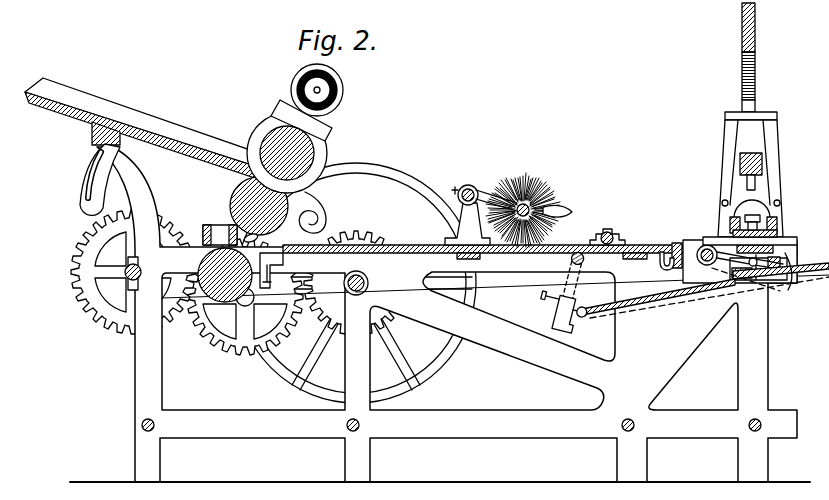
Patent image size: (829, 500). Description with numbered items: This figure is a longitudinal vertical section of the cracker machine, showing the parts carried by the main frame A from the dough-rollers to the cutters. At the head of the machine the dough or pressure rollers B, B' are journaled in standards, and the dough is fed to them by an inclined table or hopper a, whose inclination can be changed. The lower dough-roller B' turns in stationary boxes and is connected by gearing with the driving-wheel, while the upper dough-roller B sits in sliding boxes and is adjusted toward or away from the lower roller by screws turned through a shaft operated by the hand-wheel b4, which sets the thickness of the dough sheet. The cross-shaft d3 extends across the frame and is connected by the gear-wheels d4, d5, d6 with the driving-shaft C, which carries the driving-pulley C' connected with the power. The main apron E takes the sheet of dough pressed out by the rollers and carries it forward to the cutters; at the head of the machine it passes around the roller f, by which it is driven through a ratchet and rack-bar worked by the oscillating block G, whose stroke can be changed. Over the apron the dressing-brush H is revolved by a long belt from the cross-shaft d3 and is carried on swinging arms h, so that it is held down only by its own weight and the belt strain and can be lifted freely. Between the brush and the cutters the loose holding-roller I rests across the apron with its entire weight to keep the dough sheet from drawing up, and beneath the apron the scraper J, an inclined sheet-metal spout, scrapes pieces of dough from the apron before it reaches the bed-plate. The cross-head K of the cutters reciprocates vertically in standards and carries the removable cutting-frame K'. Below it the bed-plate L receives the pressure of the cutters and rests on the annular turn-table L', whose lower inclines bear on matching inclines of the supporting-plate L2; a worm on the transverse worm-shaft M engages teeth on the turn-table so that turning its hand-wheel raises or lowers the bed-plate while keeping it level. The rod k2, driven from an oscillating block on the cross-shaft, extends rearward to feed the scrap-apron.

The main frame A is at (440, 314).
The inclined table or hopper a is at (112, 148).
The upper dough-roller B is at (303, 166).
The lower dough-roller B' is at (236, 211).
The hand-wheel b4 is at (298, 84).
The driving-shaft C is at (586, 277).
The driving-pulley C' is at (356, 283).
The cross-shaft d3 is at (137, 284).
The gear-wheel d4 is at (88, 295).
The gear-wheel d5 is at (233, 342).
The gear-wheel d6 is at (392, 318).
The main apron E is at (425, 245).
The roller f is at (200, 264).
The oscillating block G is at (562, 318).
The dressing-brush H is at (549, 200).
The swinging arms h is at (483, 191).
The holding-roller I is at (608, 229).
The scraper J is at (663, 252).
The cross-head K is at (759, 120).
The cutting-frame K' is at (753, 230).
The rod k2 is at (705, 300).
The bed-plate L is at (747, 254).
The annular turn-table L' is at (781, 280).
The supporting-plate L2 is at (742, 286).
The worm-shaft M is at (702, 250).